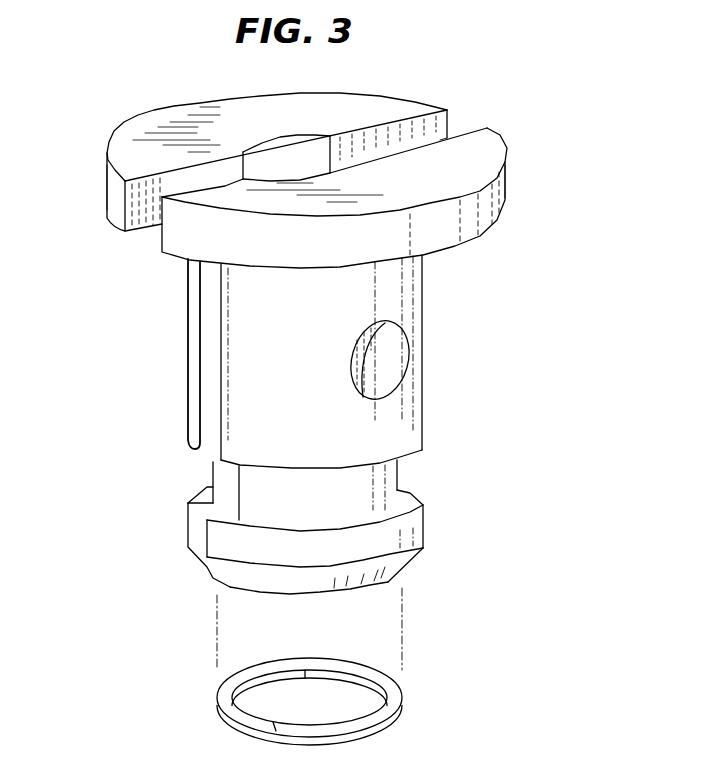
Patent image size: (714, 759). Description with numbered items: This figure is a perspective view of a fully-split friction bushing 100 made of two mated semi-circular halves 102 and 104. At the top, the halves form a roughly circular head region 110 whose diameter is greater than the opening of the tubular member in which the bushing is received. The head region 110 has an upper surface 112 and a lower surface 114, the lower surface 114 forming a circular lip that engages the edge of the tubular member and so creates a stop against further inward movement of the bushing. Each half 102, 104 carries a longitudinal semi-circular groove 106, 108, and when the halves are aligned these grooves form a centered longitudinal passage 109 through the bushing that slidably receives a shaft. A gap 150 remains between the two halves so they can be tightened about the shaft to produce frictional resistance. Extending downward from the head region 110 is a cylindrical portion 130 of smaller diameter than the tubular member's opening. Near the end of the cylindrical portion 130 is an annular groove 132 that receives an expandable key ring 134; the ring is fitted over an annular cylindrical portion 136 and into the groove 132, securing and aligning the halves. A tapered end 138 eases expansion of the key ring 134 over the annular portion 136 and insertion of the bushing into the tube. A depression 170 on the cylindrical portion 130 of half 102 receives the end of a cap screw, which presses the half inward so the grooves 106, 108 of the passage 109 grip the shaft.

The friction bushing 100 is at (156, 634).
The mated half 102 is at (432, 305).
The mated half 104 is at (182, 317).
The longitudinal semi-circular groove 106 is at (286, 136).
The longitudinal semi-circular groove 108 is at (345, 168).
The longitudinal passage 109 is at (303, 143).
The head region 110 is at (141, 93).
The upper surface 112 is at (222, 102).
The lower surface 114 is at (120, 233).
The cylindrical portion 130 is at (150, 258).
The annular groove 132 is at (426, 474).
The expandable key ring 134 is at (400, 700).
The annular cylindrical portion 136 is at (413, 530).
The tapered end 138 is at (393, 580).
The gap 150 is at (500, 101).
The depression 170 is at (398, 372).